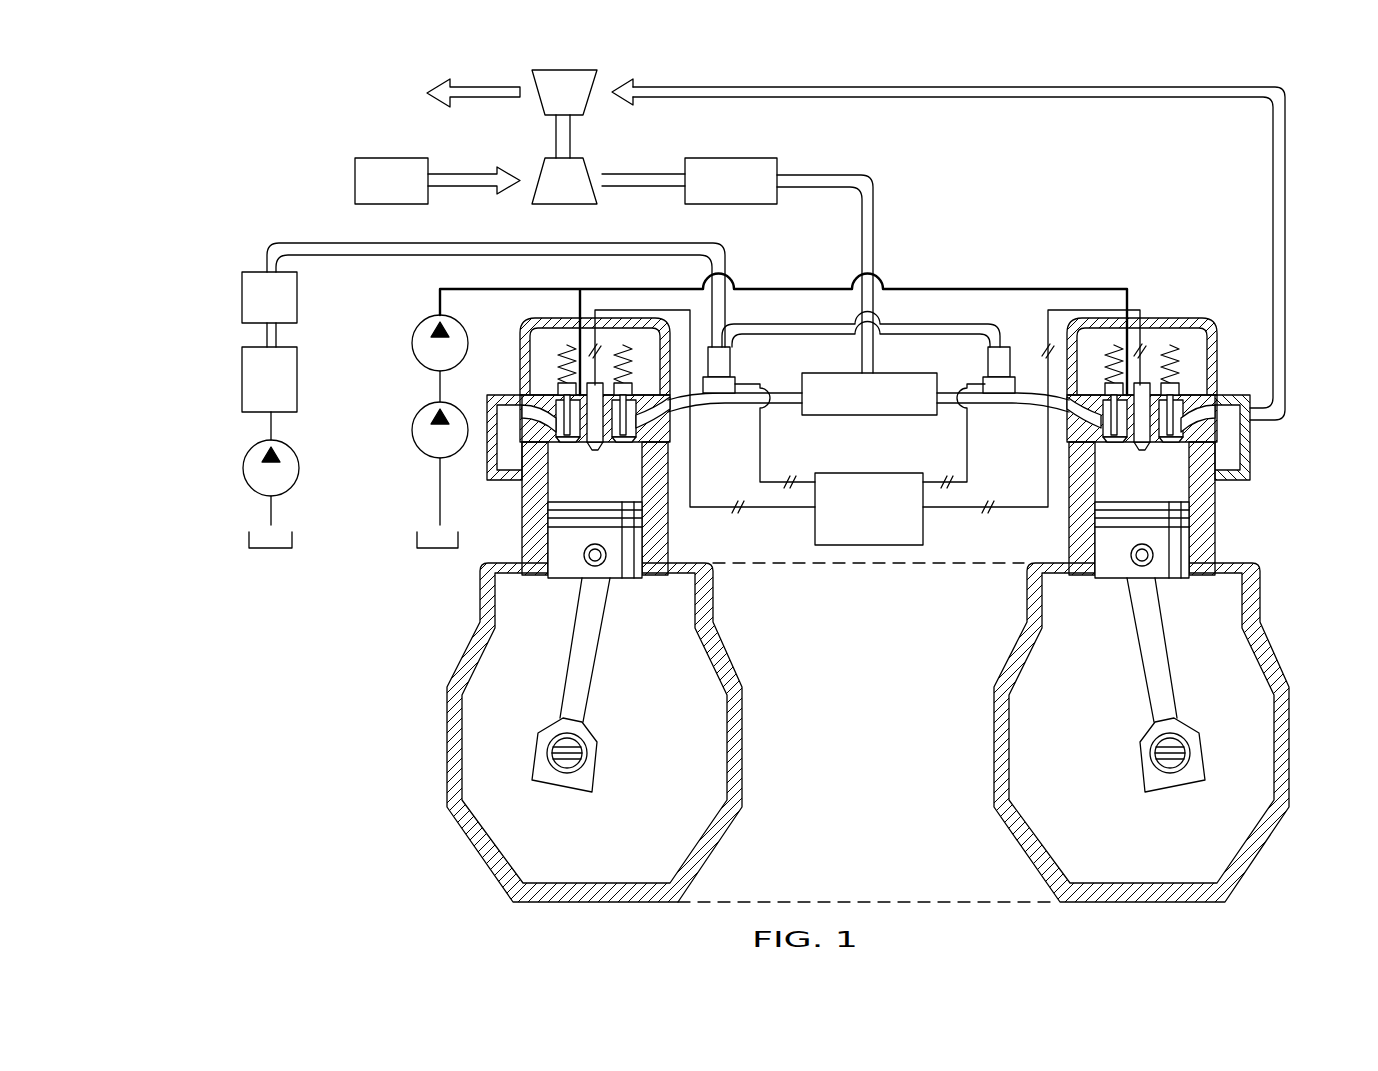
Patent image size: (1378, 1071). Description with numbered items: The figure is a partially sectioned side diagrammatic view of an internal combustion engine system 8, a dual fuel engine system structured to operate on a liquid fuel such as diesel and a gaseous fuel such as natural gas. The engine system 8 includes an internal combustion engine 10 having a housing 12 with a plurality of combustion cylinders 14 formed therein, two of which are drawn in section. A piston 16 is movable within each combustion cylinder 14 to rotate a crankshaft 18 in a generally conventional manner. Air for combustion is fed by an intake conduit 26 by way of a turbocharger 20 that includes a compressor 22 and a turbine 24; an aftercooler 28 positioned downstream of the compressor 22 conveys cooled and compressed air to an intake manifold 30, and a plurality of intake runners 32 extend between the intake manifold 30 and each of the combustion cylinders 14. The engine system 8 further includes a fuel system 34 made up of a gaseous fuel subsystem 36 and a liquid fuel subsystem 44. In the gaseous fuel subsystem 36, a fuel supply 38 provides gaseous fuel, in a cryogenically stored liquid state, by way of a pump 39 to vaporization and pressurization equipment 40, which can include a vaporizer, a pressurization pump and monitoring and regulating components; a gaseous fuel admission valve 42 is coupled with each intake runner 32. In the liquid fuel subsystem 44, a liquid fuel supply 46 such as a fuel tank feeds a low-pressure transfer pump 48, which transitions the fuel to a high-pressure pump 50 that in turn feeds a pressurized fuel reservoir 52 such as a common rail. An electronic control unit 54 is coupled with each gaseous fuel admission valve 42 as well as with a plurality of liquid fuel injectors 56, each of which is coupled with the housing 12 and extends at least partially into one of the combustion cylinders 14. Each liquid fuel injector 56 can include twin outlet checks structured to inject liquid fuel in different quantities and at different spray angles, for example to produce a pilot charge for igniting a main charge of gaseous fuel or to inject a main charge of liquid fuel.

The internal combustion engine system 8 is at (218, 100).
The internal combustion engine 10 is at (1314, 593).
The housing 12 is at (1291, 681).
The combustion cylinders 14 is at (552, 462).
The piston 16 is at (566, 579).
The crankshaft 18 is at (587, 756).
The turbocharger 20 is at (608, 87).
The compressor 22 is at (572, 205).
The turbine 24 is at (572, 70).
The intake conduit 26 is at (395, 158).
The aftercooler 28 is at (740, 158).
The intake manifold 30 is at (842, 373).
The intake runners 32 is at (718, 406).
The fuel system 34 is at (216, 286).
The gaseous fuel subsystem 36 is at (238, 420).
The fuel supply 38 is at (296, 539).
The pump 39 is at (299, 467).
The vaporization and pressurization equipment 40 is at (324, 384).
The gaseous fuel admission valve 42 is at (735, 351).
The liquid fuel subsystem 44 is at (400, 552).
The liquid fuel supply 46 is at (460, 539).
The low-pressure transfer pump 48 is at (412, 430).
The high-pressure pump 50 is at (412, 343).
The pressurized fuel reservoir 52 is at (977, 280).
The electronic control unit 54 is at (878, 546).
The liquid fuel injectors 56 is at (594, 451).